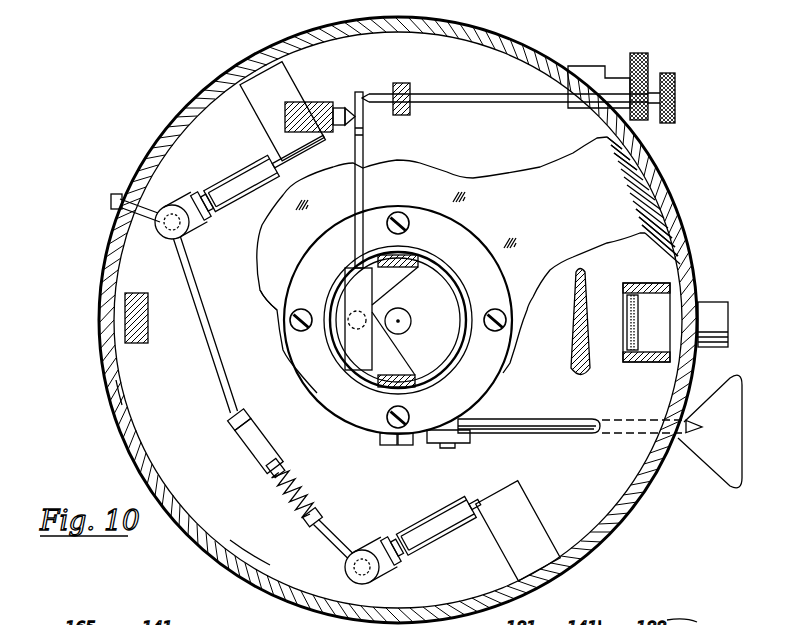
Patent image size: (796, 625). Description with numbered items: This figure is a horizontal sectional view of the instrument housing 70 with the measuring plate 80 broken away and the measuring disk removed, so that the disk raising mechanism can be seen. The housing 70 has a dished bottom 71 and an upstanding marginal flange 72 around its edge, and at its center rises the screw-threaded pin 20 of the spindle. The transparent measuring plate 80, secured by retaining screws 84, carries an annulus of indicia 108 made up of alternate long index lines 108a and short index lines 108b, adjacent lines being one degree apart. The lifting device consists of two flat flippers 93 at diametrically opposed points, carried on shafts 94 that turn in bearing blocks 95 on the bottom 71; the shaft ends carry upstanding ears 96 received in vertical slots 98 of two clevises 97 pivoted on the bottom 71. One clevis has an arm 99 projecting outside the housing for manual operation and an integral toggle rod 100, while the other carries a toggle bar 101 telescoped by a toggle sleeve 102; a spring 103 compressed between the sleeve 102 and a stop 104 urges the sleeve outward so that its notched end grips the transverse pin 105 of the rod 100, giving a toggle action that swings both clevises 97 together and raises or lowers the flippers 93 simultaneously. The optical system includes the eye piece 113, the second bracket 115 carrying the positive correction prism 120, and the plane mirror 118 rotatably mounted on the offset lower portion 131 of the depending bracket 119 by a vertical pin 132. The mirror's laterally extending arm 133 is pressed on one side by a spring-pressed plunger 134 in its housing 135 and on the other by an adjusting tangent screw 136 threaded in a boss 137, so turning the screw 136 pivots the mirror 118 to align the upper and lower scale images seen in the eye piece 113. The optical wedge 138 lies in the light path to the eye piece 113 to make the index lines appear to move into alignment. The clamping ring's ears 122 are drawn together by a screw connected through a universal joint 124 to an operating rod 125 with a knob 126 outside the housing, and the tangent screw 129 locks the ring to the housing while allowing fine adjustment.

The screw-threaded pin 20 is at (405, 321).
The housing 70 is at (626, 517).
The dished bottom 71 is at (235, 537).
The upstanding marginal flange 72 is at (118, 403).
The transparent measuring plate 80 is at (512, 185).
The retaining screws 84 is at (290, 302).
The flippers 93 is at (258, 108).
The shafts 94 is at (278, 155).
The bearing blocks 95 is at (222, 202).
The upstanding ears 96 is at (200, 192).
The clevises 97 is at (162, 240).
The vertical slots 98 is at (200, 222).
The arm 99 is at (112, 200).
The toggle rod 100 is at (208, 338).
The toggle bar 101 is at (342, 540).
The toggle sleeve 102 is at (268, 453).
The spring 103 is at (307, 493).
The stop 104 is at (328, 513).
The transverse pin 105 is at (242, 415).
The indicia 108 is at (640, 197).
The long index lines 108a is at (597, 163).
The short index lines 108b is at (614, 187).
The eye piece 113 is at (710, 305).
The second bracket 115 is at (640, 283).
The plane mirror 118 is at (358, 295).
The depending bracket 119 is at (418, 257).
The positive correction prism 120 is at (627, 343).
The radially projecting ears 122 is at (390, 445).
The universal joint 124 is at (450, 444).
The operating rod 125 is at (540, 419).
The knob 126 is at (708, 458).
The tangent screw 129 is at (648, 62).
The offset lower portion 131 is at (383, 357).
The vertical pin 132 is at (340, 333).
The laterally extending arm 133 is at (358, 195).
The spring-pressed plunger 134 is at (342, 108).
The plunger housing 135 is at (320, 102).
The adjusting tangent screw 136 is at (455, 97).
The screw-threaded boss 137 is at (612, 88).
The optical wedge 138 is at (572, 336).